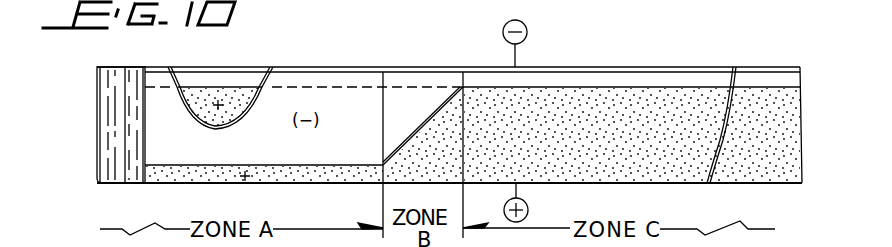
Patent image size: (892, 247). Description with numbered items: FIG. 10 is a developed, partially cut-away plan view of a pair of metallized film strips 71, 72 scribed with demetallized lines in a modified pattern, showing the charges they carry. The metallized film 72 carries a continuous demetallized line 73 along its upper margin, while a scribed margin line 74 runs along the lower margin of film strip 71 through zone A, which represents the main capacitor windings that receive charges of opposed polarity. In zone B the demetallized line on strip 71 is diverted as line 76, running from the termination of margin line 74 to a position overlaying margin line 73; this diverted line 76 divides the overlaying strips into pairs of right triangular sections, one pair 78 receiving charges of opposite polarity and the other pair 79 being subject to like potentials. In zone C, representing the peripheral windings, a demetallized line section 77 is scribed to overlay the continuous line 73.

The film strip 71 is at (310, 67).
The metallized film 72 is at (222, 68).
The continuous demetallized line 73 is at (190, 86).
The scribed margin line 74 is at (313, 167).
The diverted demetallized line 76 is at (432, 117).
The demetallized line section 77 is at (588, 87).
The pair of overlaying right triangular sections 78 is at (398, 122).
The other pair of triangular overlying areas 79 is at (443, 153).